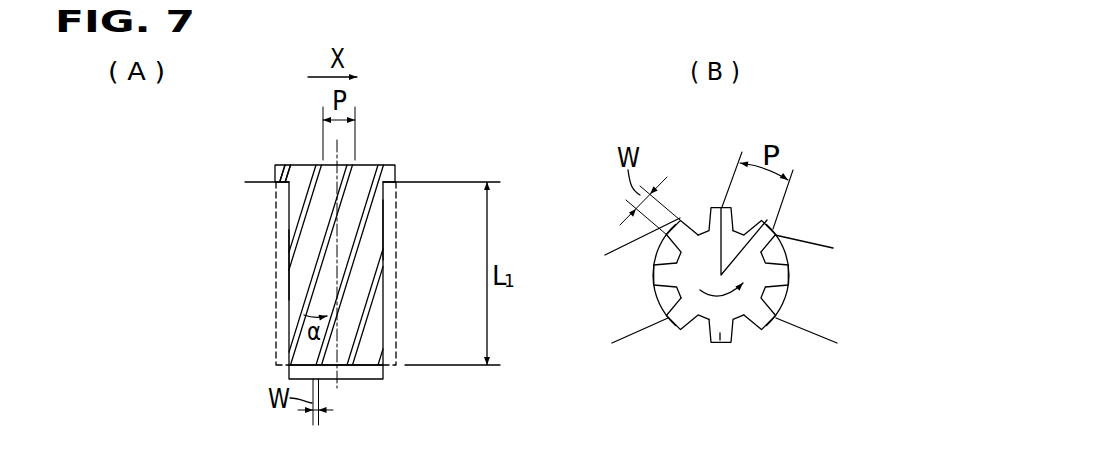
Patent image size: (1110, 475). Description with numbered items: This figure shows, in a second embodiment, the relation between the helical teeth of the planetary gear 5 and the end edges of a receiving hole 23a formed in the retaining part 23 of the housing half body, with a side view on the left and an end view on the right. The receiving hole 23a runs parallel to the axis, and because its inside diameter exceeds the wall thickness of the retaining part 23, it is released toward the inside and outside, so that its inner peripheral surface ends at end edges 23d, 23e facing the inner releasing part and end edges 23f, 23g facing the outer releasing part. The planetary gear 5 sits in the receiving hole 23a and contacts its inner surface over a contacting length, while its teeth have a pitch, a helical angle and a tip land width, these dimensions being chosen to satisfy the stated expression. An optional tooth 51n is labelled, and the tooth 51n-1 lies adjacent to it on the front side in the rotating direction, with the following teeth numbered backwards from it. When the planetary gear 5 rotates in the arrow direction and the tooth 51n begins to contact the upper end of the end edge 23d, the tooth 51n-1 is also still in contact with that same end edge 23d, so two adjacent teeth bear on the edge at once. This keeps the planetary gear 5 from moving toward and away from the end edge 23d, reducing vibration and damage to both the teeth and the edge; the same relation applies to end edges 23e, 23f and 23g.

The planetary gear 5 is at (303, 162).
The retaining part 23 is at (268, 182).
The receiving hole 23a is at (386, 198).
The end edge 23d is at (384, 230).
The end edge 23e is at (300, 268).
The end edge 23f is at (774, 232).
The end edge 23g is at (690, 228).
The tooth 51n is at (373, 163).
The tooth 51n-1 is at (366, 372).